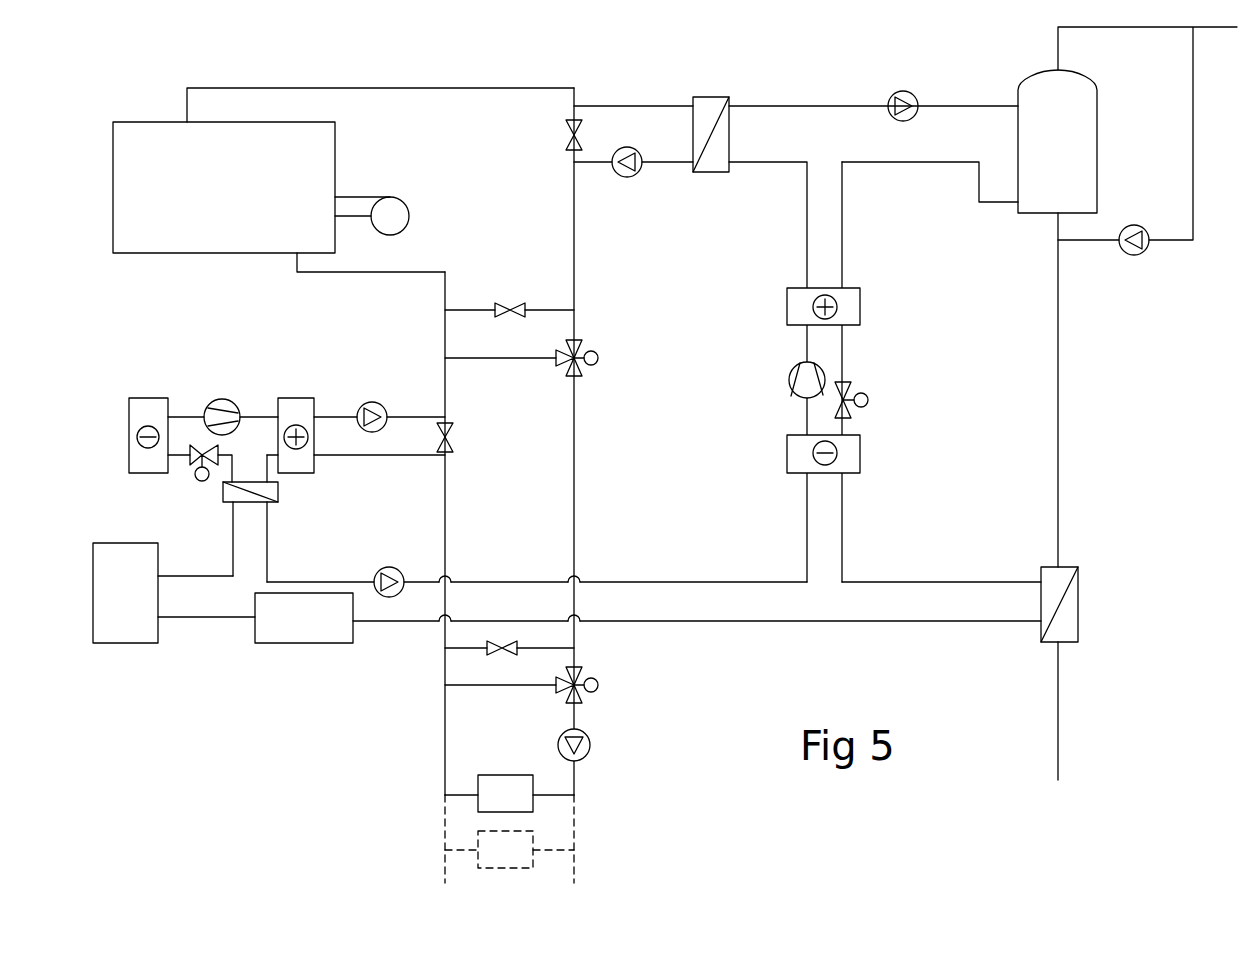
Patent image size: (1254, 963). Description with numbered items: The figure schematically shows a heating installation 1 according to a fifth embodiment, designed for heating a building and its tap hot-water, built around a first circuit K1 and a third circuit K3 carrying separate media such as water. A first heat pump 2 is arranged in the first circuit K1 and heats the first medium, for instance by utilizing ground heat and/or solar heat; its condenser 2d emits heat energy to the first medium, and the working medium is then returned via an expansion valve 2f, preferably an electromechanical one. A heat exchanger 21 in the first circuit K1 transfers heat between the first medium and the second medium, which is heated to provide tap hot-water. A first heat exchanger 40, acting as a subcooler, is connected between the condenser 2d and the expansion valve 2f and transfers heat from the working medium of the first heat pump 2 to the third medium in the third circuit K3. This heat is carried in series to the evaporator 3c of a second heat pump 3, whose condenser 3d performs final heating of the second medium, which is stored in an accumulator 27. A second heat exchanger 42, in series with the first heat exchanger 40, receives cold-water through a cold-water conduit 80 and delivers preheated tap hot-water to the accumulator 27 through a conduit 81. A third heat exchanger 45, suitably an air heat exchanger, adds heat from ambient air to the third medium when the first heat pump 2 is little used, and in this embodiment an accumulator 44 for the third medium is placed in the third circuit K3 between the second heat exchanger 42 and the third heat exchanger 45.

The heating installation 1 is at (661, 672).
The first circuit K1 is at (499, 77).
The third circuit K3 is at (697, 571).
The first heat pump 2 is at (266, 392).
The condenser 2d is at (300, 398).
The expansion valve 2f is at (192, 470).
The second heat pump 3 is at (913, 372).
The condenser 3d is at (862, 305).
The evaporator 3c is at (862, 458).
The heat exchanger 21 is at (726, 143).
The accumulator 27 is at (1086, 154).
The first heat exchanger 40 is at (280, 498).
The second heat exchanger 42 is at (1076, 608).
The accumulator 44 is at (318, 642).
The third heat exchanger 45 is at (150, 640).
The cold-water conduit 80 is at (1060, 724).
The conduit 81 is at (1060, 440).